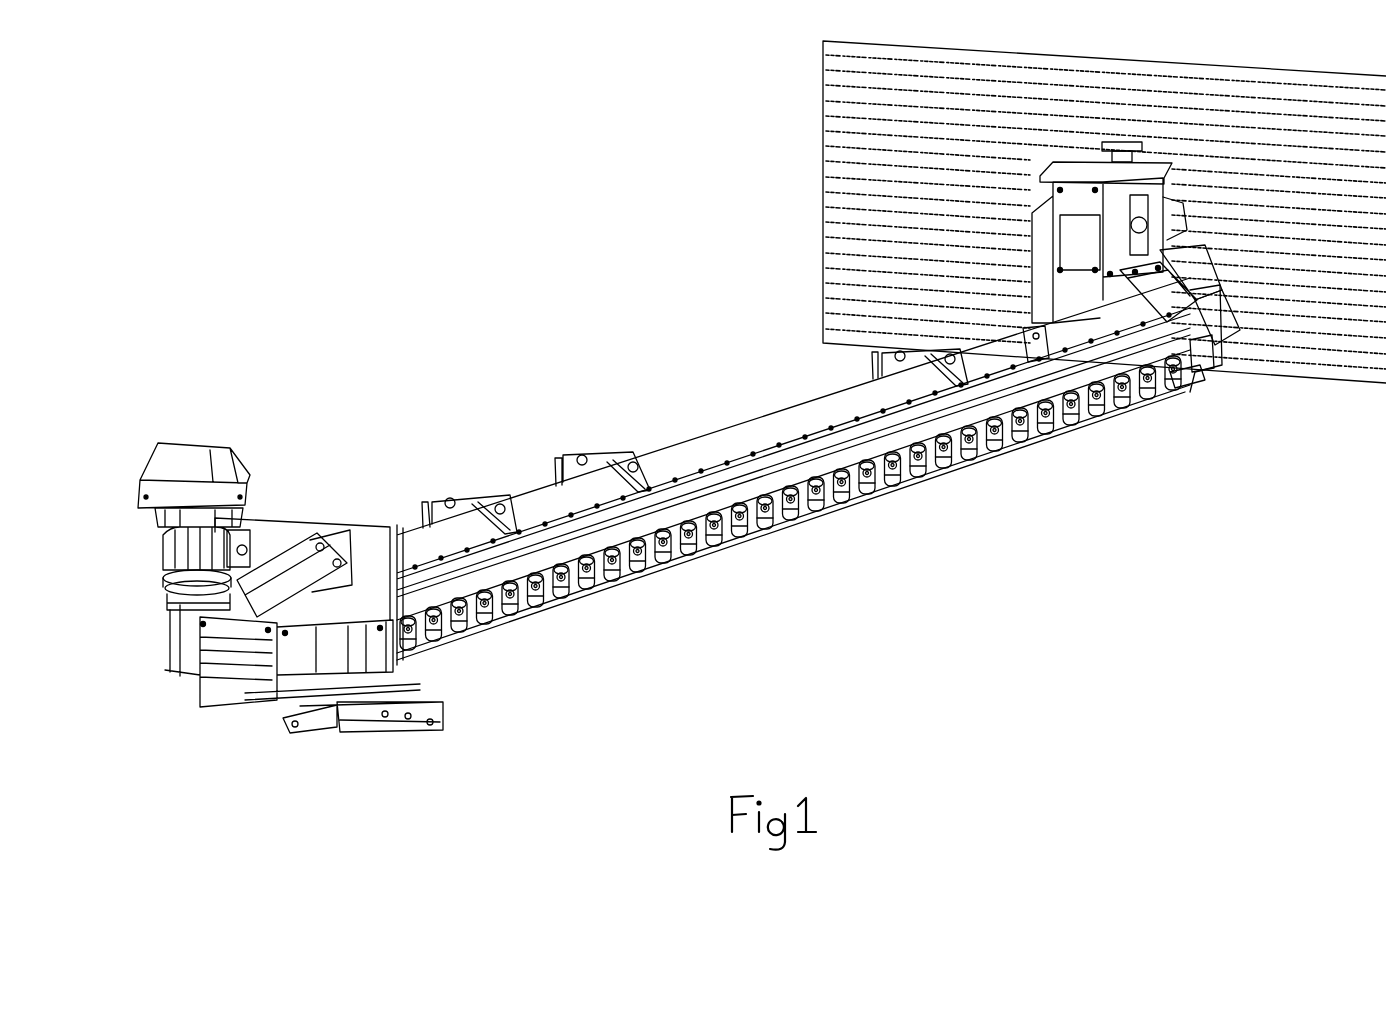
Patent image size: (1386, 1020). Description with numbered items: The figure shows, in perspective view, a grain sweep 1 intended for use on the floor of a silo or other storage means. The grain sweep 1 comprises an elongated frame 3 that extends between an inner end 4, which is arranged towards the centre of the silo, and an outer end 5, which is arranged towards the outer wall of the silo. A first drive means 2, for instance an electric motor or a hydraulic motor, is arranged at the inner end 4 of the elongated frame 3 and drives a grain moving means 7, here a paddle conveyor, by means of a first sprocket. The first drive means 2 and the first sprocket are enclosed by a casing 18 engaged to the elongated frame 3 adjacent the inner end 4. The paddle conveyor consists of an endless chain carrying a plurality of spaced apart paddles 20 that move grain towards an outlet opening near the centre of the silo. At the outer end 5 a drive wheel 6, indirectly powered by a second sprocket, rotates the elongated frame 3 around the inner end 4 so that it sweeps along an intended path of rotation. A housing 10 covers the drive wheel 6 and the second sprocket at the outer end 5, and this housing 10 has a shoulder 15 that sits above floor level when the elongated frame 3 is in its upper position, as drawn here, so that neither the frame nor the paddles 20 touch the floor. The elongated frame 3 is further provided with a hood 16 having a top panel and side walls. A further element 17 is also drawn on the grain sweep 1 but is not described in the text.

The grain sweep 1 is at (562, 262).
The first drive means 2 is at (207, 420).
The elongated frame 3 is at (717, 418).
The inner end 4 is at (364, 758).
The outer end 5 is at (1206, 408).
The drive wheel 6 is at (1217, 337).
The grain moving means 7 is at (831, 508).
The housing 10 is at (1042, 260).
The shoulder 15 is at (1197, 348).
The hood 16 is at (555, 498).
The hopper inlet cap 17 is at (1132, 135).
The casing 18 is at (227, 628).
The paddles 20 is at (961, 470).